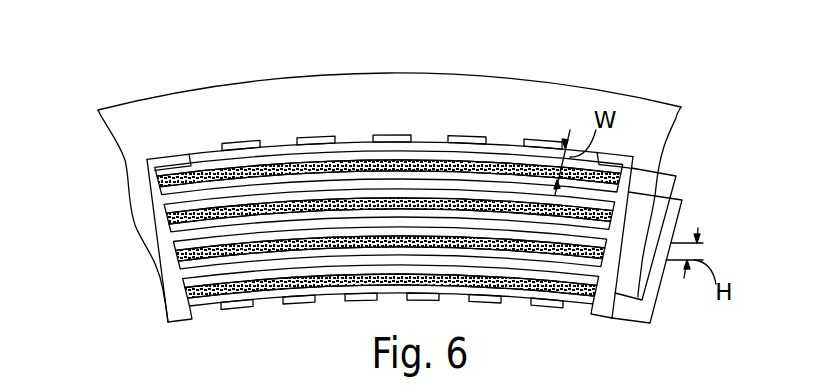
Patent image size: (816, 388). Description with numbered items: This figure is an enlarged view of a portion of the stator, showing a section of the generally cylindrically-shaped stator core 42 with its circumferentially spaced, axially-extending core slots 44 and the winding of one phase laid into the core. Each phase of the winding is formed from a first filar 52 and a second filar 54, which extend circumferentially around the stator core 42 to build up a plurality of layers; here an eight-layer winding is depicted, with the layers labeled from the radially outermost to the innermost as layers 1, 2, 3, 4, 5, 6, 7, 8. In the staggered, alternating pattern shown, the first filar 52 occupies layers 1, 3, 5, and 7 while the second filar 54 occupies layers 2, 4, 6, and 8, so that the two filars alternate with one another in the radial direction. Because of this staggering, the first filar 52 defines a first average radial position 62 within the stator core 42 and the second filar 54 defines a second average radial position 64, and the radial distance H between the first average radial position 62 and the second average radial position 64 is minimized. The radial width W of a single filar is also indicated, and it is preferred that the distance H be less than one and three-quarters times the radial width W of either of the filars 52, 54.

The layer 1 is at (156, 172).
The layer 2 is at (161, 191).
The layer 3 is at (165, 209).
The layer 4 is at (170, 228).
The layer 5 is at (175, 246).
The layer 6 is at (179, 265).
The layer 7 is at (184, 283).
The layer 8 is at (189, 302).
The stator core 42 is at (507, 77).
The core slots 44 is at (240, 143).
The first filar 52 is at (208, 156).
The second filar 54 is at (281, 296).
The first average radial position 62 is at (678, 238).
The second average radial position 64 is at (668, 262).